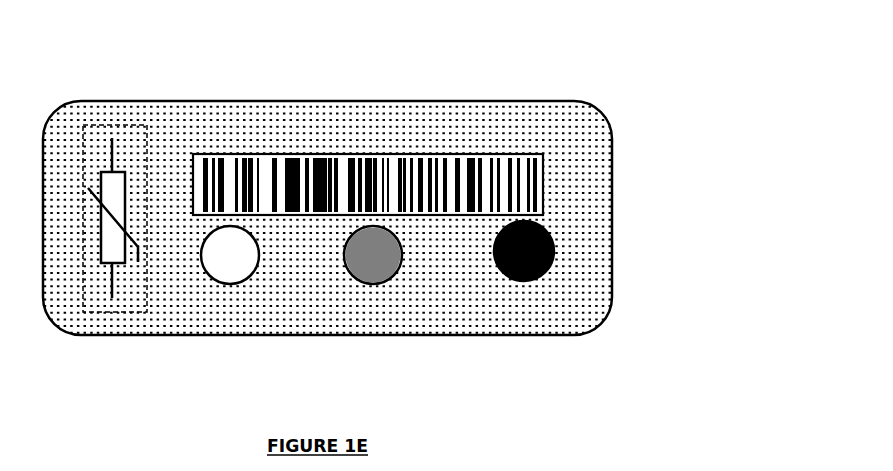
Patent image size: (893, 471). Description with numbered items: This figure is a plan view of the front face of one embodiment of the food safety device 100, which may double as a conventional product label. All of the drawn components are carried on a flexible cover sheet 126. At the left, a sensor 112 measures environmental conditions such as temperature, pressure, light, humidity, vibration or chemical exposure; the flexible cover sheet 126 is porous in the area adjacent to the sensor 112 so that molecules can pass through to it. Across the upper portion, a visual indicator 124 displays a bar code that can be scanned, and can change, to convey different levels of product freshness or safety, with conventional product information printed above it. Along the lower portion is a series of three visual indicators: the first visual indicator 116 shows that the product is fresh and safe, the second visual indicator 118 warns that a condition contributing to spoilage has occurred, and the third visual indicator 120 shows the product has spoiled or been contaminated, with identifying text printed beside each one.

The food safety device 100 is at (401, 29).
The sensor 112 is at (101, 135).
The first visual indicator 116 is at (213, 262).
The second visual indicator 118 is at (360, 263).
The third visual indicator 120 is at (495, 265).
The visual indicator 124 is at (230, 162).
The flexible cover sheet 126 is at (544, 123).